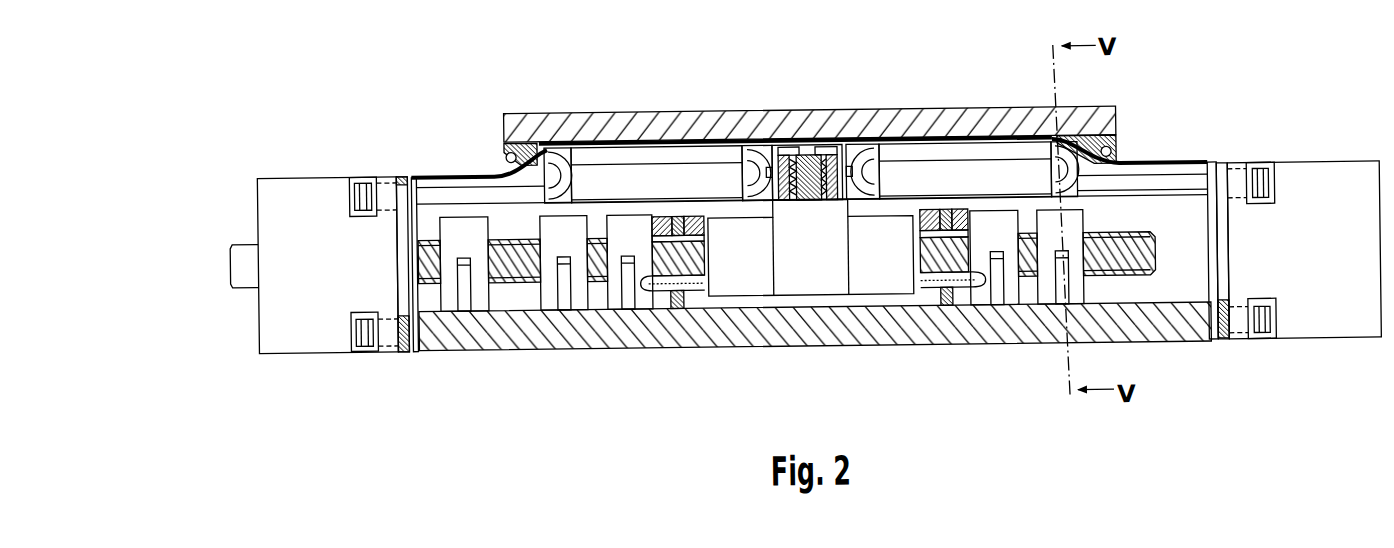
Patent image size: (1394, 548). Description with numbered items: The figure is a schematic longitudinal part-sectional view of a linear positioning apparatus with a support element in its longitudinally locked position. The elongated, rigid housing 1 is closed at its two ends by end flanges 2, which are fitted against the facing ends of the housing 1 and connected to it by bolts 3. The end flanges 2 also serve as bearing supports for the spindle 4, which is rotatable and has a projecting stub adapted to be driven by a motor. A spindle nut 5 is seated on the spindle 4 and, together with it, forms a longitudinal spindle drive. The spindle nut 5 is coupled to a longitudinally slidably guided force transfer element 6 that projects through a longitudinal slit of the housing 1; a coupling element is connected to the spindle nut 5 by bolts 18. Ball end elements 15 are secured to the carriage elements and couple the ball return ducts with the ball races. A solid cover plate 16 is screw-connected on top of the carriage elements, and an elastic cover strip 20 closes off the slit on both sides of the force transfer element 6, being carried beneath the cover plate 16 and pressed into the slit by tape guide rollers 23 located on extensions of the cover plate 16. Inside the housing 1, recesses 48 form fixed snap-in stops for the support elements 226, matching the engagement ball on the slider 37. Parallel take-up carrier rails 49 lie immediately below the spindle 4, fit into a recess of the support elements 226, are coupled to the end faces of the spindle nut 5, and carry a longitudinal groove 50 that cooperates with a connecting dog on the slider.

The housing 1 is at (678, 328).
The end flange 2 is at (290, 185).
The bolt 3 is at (366, 176).
The spindle 4 is at (518, 240).
The spindle nut 5 is at (734, 272).
The force transfer element 6 is at (872, 109).
The ball end element 15 is at (752, 147).
The cover plate 16 is at (615, 118).
The bolt 18 is at (793, 147).
The cover strip 20 is at (447, 172).
The tape guide roller 23 is at (507, 150).
The slider 37 is at (958, 293).
The recess 48 is at (455, 322).
The take-up carrier rail 49 is at (606, 330).
The longitudinal groove 50 is at (638, 290).
The support element 226 is at (449, 300).